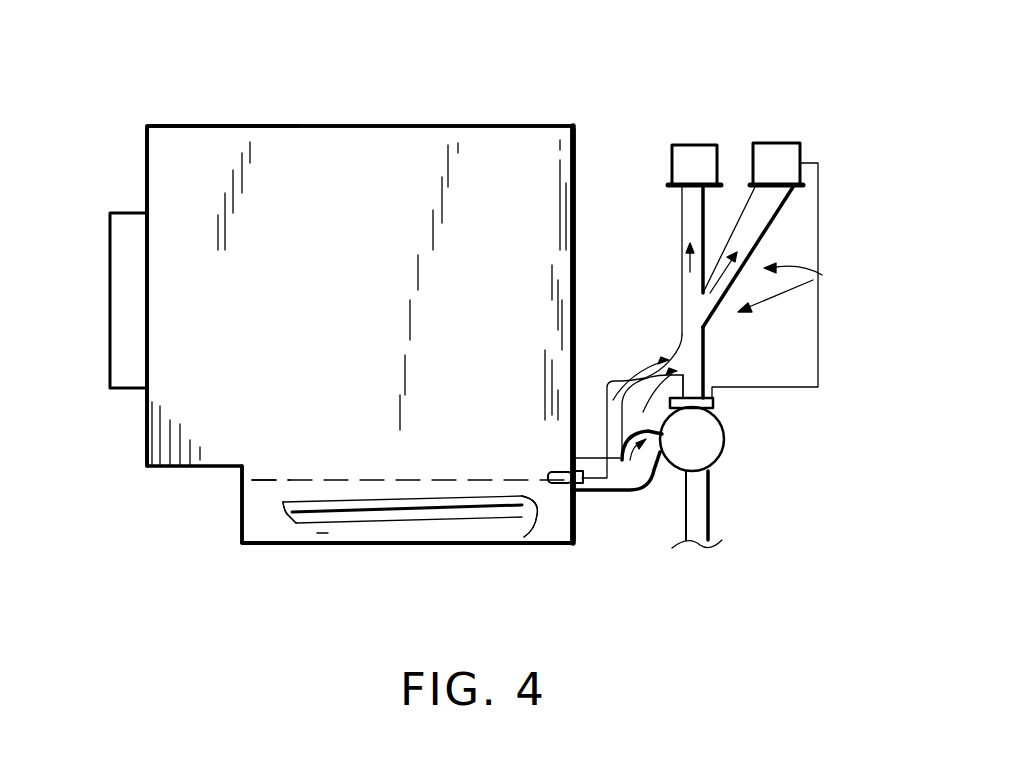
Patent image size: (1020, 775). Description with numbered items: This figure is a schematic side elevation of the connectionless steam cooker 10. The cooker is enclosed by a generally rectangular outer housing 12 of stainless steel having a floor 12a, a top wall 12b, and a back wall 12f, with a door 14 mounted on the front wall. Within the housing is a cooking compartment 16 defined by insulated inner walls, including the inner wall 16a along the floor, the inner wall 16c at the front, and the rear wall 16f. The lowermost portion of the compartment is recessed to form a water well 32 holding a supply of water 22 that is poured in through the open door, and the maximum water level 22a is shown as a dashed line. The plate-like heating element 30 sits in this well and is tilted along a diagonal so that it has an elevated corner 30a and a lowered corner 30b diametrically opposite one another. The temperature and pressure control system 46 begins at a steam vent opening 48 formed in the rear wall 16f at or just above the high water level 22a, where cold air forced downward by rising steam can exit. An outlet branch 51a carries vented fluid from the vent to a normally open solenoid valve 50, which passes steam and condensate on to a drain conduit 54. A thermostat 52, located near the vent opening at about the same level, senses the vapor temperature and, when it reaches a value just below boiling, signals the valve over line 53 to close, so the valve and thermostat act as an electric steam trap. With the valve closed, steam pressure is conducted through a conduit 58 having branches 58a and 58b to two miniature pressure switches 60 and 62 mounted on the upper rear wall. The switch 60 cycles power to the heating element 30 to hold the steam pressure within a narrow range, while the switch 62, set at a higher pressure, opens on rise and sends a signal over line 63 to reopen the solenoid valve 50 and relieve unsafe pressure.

The connectionless steam cooker 10 is at (360, 103).
The outer housing 12 is at (147, 150).
The floor 12a is at (288, 545).
The top wall 12b is at (487, 123).
The back wall 12f is at (578, 296).
The door 14 is at (130, 328).
The cooking compartment 16 is at (336, 360).
The inner wall 16a is at (407, 577).
The inner wall 16c is at (146, 259).
The rear wall 16f is at (624, 335).
The water 22 is at (552, 535).
The maximum water level 22a is at (343, 478).
The heating element 30 is at (405, 518).
The elevated corner 30a is at (518, 543).
The lowered corner 30b is at (272, 538).
The water well 32 is at (262, 471).
The temperature and pressure control system 46 is at (802, 284).
The steam vent opening 48 is at (555, 457).
The solenoid valve 50 is at (726, 438).
The outlet branch 51a is at (638, 492).
The thermostat 52 is at (578, 492).
The line 53 is at (607, 410).
The drain conduit 54 is at (710, 493).
The conduit 58 is at (705, 348).
The conduit branch 58a is at (690, 217).
The conduit branch 58b is at (766, 209).
The pressure switch 60 is at (697, 160).
The pressure microswitch 62 is at (777, 158).
The line 63 is at (818, 372).